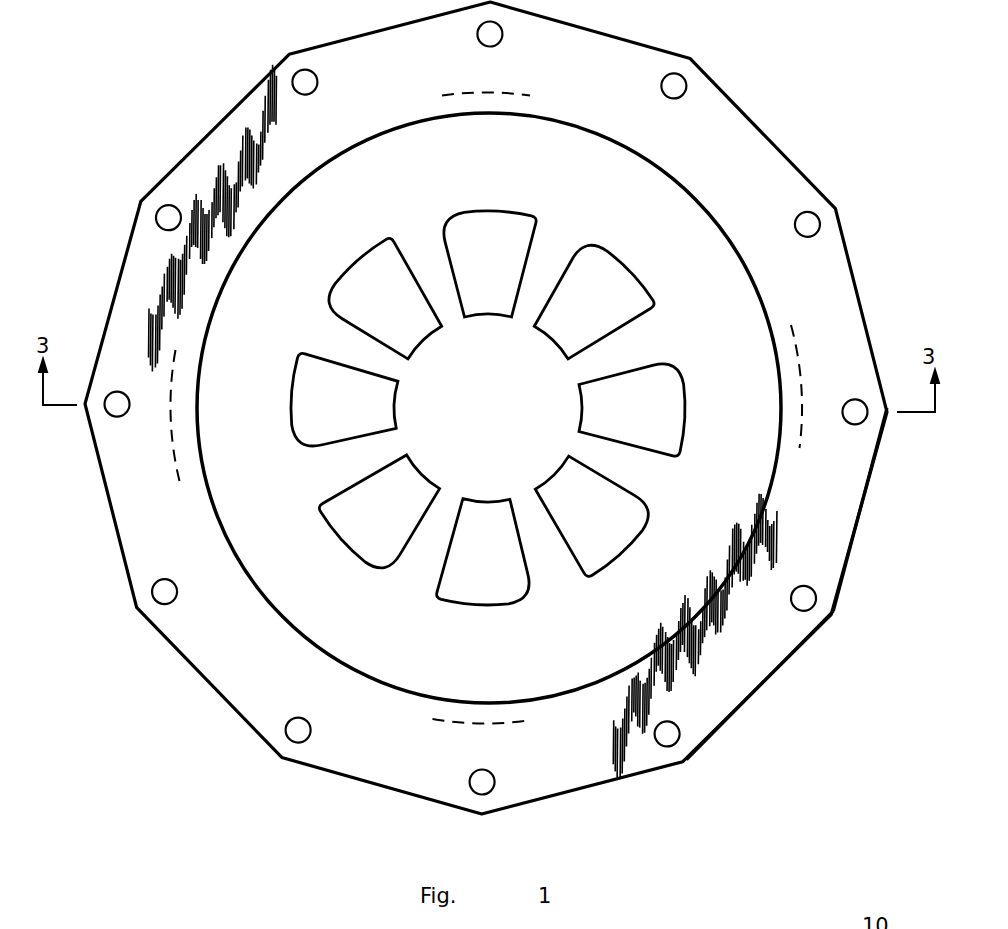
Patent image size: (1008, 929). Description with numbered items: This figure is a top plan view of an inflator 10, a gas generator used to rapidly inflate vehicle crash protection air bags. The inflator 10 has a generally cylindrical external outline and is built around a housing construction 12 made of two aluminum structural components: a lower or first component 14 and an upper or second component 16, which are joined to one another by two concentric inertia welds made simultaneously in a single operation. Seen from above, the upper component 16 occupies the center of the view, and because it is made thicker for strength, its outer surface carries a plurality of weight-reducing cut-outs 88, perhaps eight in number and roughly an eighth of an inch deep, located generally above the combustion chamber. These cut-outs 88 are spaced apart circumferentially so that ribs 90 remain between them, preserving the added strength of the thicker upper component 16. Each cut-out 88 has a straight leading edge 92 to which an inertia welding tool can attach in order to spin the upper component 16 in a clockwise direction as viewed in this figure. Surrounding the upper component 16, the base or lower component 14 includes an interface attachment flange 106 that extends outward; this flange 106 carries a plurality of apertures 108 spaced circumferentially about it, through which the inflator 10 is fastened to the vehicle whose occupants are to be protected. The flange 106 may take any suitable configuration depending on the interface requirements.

The inflator 10 is at (760, 100).
The housing construction 12 is at (866, 285).
The lower or first component 14 is at (770, 658).
The upper or second component 16 is at (752, 470).
The cut-outs 88 is at (507, 211).
The ribs 90 is at (563, 238).
The straight leading edges 92 is at (320, 360).
The interface attachment flange 106 is at (833, 553).
The apertures 108 is at (812, 214).